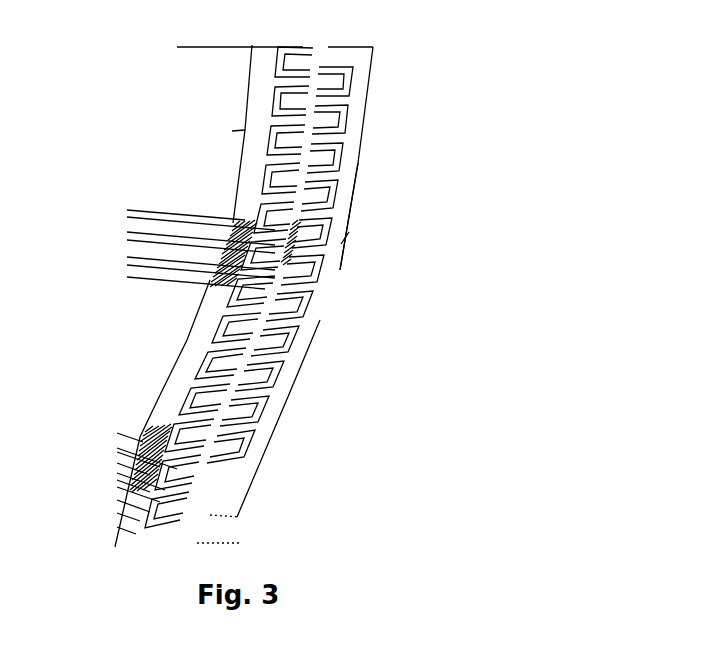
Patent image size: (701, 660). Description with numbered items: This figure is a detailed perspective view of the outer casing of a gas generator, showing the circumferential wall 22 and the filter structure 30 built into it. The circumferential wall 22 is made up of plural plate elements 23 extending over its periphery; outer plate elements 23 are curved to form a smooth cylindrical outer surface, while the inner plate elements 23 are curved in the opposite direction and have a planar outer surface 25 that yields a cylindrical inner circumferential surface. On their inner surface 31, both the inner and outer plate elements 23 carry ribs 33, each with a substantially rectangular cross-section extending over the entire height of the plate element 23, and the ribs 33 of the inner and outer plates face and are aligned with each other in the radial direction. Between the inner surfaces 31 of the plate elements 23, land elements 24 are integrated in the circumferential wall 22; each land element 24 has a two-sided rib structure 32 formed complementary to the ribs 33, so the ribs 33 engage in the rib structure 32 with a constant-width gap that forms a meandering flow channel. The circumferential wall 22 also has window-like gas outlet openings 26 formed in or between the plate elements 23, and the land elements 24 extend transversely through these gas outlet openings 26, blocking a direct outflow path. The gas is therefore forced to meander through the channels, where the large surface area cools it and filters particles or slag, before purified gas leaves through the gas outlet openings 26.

The circumferential wall 22 is at (468, 140).
The plate element 23 is at (257, 90).
The land element 24 is at (310, 86).
The outer surface 25 is at (200, 148).
The gas outlet opening 26 is at (323, 277).
The filter structure 30 is at (368, 222).
The inner surface 31 is at (200, 391).
The rib structure 32 is at (262, 358).
The rib 33 is at (305, 237).